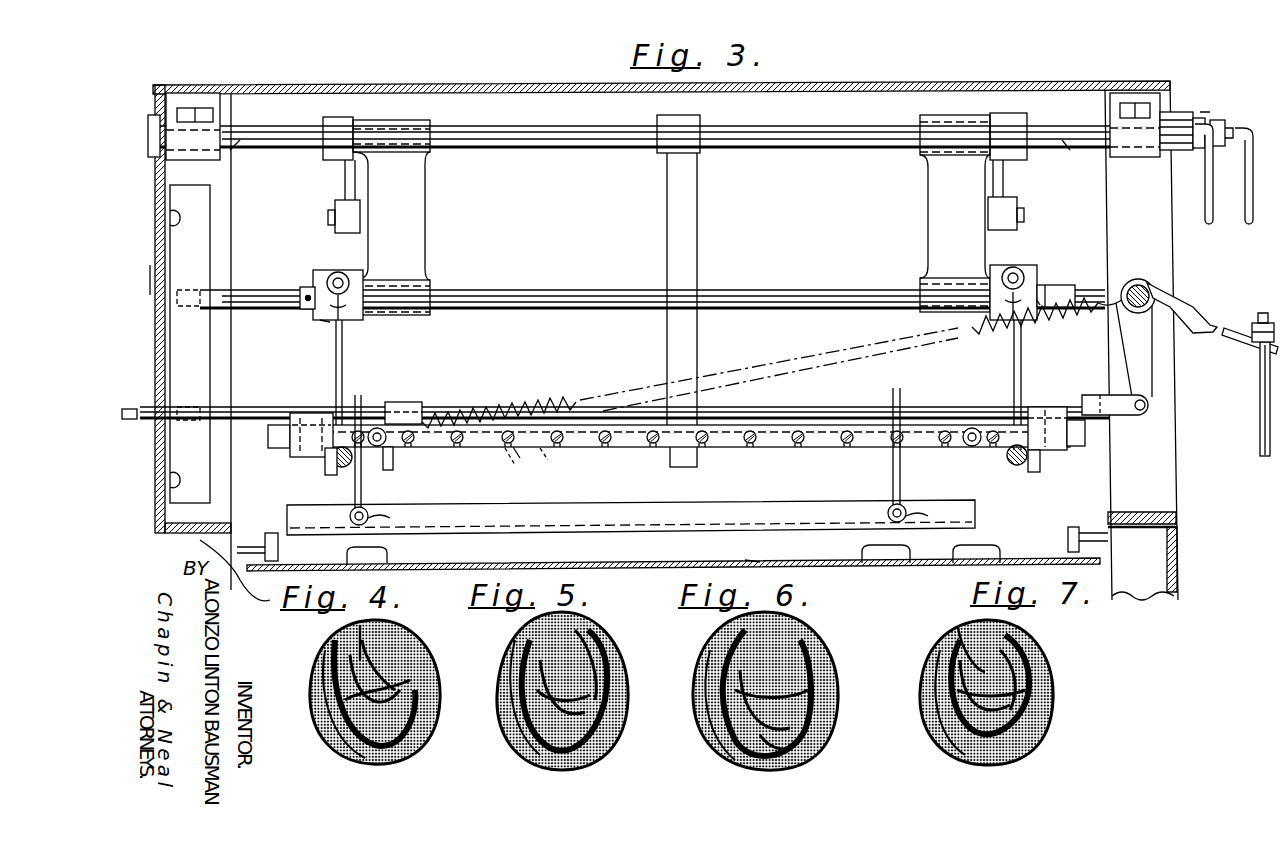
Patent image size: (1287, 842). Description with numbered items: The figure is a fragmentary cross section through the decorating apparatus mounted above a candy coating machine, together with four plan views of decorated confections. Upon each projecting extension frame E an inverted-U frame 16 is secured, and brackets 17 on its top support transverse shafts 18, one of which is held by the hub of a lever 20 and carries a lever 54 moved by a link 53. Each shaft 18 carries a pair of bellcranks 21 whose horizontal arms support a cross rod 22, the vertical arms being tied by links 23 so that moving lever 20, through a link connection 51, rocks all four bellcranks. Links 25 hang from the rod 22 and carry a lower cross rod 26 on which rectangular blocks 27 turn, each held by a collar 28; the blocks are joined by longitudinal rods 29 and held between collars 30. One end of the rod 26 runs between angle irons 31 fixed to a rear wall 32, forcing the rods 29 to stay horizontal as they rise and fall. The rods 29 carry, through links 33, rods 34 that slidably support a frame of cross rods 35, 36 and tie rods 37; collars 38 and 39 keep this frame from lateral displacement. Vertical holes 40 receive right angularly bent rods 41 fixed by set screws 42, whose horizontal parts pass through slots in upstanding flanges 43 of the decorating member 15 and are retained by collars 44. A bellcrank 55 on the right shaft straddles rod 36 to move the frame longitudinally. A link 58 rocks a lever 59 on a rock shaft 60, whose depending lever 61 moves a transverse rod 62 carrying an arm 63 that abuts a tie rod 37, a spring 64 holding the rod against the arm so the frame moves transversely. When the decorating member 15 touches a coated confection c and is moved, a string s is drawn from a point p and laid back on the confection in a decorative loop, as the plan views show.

In FIG. 3, the decorating member 15 is at (765, 548).
In FIG. 3, the frame 16 is at (197, 86).
In FIG. 3, the brackets 17 is at (212, 114).
In FIG. 3, the shafts 18 is at (258, 150).
In FIG. 3, the lever 20 is at (1185, 118).
In FIG. 3, the bellcranks 21 is at (345, 172).
In FIG. 3, the cross rod 22 is at (546, 149).
In FIG. 3, the links 23 is at (335, 222).
In FIG. 3, the links 25 is at (425, 243).
In FIG. 3, the cross rod 26 is at (528, 290).
In FIG. 3, the rectangular blocks 27 is at (325, 322).
In FIG. 3, the collar 28 is at (303, 312).
In FIG. 3, the longitudinal rod 29 is at (342, 278).
In FIG. 3, the collars 30 is at (315, 276).
In FIG. 3, the angle irons 31 is at (190, 344).
In FIG. 3, the rear wall 32 is at (155, 278).
In FIG. 3, the links 33 is at (343, 355).
In FIG. 3, the rods 34 is at (342, 468).
In FIG. 3, the cross rod 35 is at (270, 438).
In FIG. 3, the cross rod 36 is at (290, 452).
In FIG. 3, the tie rods 37 is at (392, 402).
In FIG. 3, the collars 38 is at (326, 472).
In FIG. 3, the collars 39 is at (320, 462).
In FIG. 3, the vertical holes 40 is at (560, 450).
In FIG. 3, the right angularly bent rods 41 is at (362, 480).
In FIG. 3, the set screws 42 is at (530, 463).
In FIG. 3, the upstanding flanges 43 is at (631, 517).
In FIG. 3, the collars 44 is at (349, 517).
In FIG. 3, the link connection 51 is at (1205, 220).
In FIG. 3, the link 53 is at (1250, 220).
In FIG. 3, the lever 54 is at (1222, 118).
In FIG. 3, the bellcrank 55 is at (697, 252).
In FIG. 3, the link 58 is at (1260, 420).
In FIG. 3, the lever 59 is at (1228, 332).
In FIG. 3, the rock shaft 60 is at (1138, 282).
In FIG. 3, the depending lever 61 is at (1140, 372).
In FIG. 3, the rod 62 is at (927, 408).
In FIG. 3, the arm 63 is at (394, 462).
In FIG. 3, the spring 64 is at (578, 400).
In FIG. 3, the extension frame E is at (237, 544).
In FIG. 3, the confection c is at (382, 558).
In FIG. 4, the confection c is at (425, 720).
In FIG. 5, the confection c is at (575, 755).
In FIG. 6, the confection c is at (838, 660).
In FIG. 7, the confection c is at (1055, 686).
In FIG. 4, the string s is at (420, 672).
In FIG. 5, the string s is at (618, 675).
In FIG. 6, the string s is at (752, 760).
In FIG. 7, the string s is at (1035, 665).
In FIG. 4, the point p is at (360, 625).
In FIG. 7, the point p is at (958, 633).